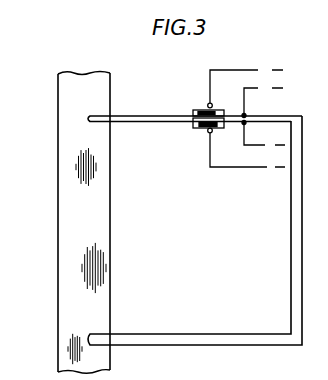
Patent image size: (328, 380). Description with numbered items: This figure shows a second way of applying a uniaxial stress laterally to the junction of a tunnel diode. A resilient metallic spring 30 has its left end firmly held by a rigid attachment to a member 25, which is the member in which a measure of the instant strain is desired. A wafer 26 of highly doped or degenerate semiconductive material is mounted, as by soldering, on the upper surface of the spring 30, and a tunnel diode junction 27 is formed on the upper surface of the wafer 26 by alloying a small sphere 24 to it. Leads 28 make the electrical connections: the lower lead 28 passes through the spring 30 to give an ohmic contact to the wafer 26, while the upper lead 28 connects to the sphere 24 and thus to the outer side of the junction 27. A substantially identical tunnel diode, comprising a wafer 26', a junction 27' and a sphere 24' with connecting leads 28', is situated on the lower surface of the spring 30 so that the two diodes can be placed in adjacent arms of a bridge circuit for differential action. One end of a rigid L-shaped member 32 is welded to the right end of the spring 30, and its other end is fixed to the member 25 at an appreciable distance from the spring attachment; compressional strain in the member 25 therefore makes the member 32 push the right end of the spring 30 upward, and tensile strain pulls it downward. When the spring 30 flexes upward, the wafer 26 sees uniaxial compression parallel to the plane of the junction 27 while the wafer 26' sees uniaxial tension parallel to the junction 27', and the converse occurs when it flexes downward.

The small sphere 24 is at (231, 79).
The sphere 24' is at (223, 156).
The member 25 is at (100, 242).
The wafer of highly doped or degenerate semiconductive material 26 is at (188, 105).
The wafer 26' is at (175, 132).
The tunnel diode junction 27 is at (188, 93).
The junction 27' is at (178, 144).
The leads 28 is at (262, 73).
The connecting leads 28' is at (261, 166).
The resilient metallic spring 30 is at (133, 115).
The rigid L-shaped member 32 is at (296, 280).